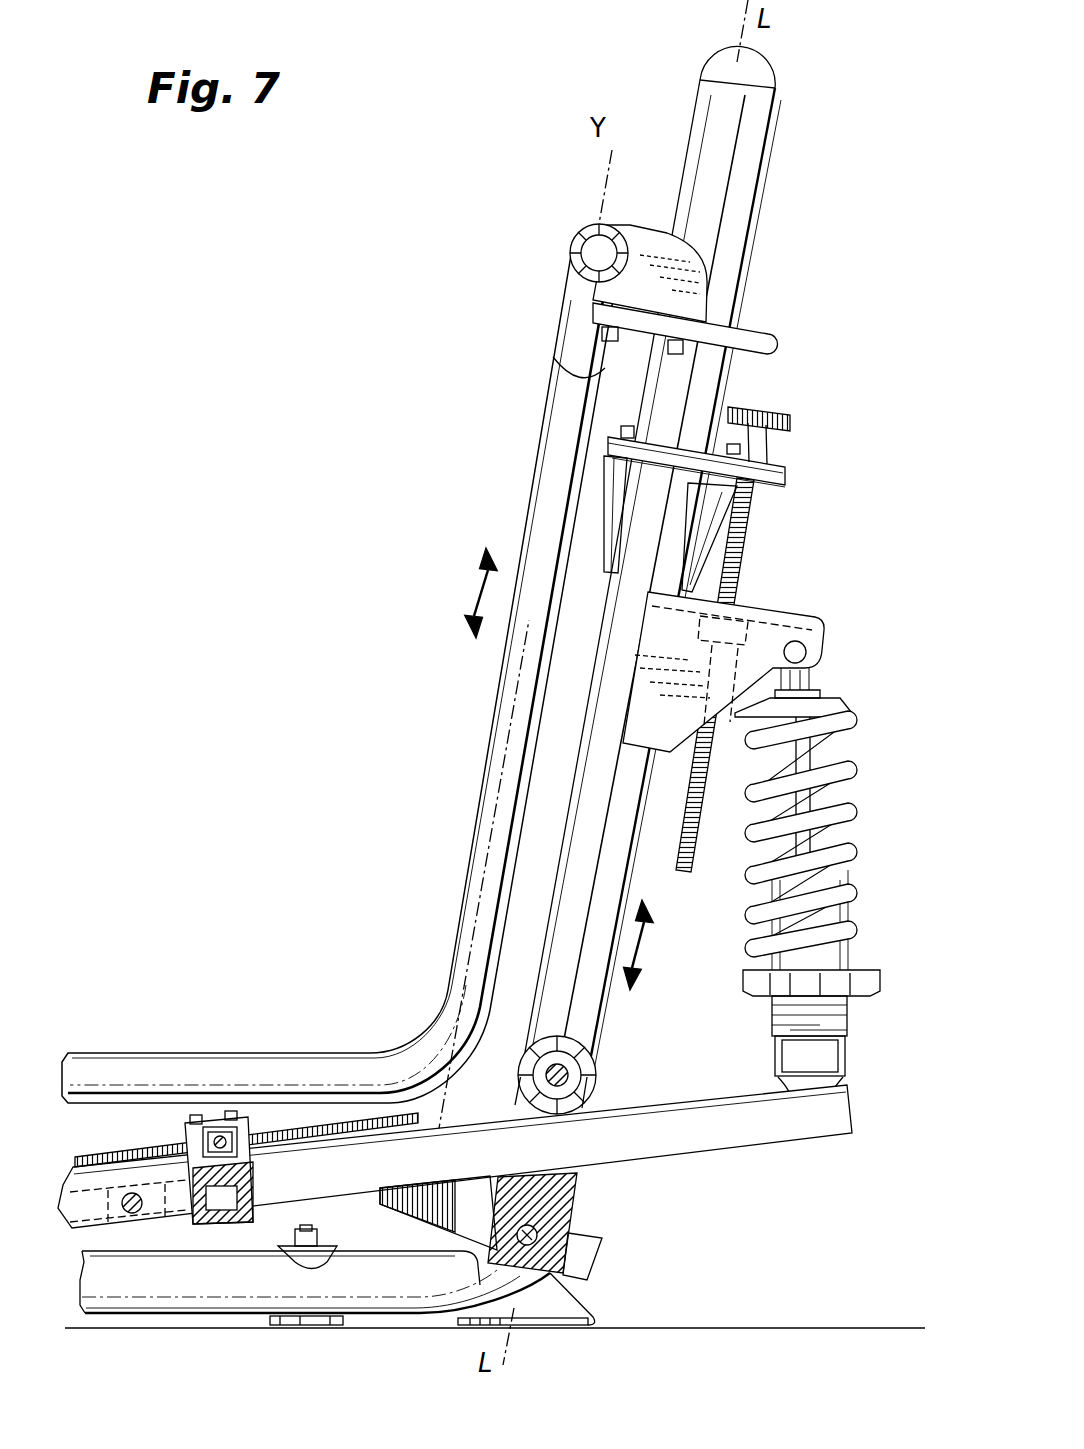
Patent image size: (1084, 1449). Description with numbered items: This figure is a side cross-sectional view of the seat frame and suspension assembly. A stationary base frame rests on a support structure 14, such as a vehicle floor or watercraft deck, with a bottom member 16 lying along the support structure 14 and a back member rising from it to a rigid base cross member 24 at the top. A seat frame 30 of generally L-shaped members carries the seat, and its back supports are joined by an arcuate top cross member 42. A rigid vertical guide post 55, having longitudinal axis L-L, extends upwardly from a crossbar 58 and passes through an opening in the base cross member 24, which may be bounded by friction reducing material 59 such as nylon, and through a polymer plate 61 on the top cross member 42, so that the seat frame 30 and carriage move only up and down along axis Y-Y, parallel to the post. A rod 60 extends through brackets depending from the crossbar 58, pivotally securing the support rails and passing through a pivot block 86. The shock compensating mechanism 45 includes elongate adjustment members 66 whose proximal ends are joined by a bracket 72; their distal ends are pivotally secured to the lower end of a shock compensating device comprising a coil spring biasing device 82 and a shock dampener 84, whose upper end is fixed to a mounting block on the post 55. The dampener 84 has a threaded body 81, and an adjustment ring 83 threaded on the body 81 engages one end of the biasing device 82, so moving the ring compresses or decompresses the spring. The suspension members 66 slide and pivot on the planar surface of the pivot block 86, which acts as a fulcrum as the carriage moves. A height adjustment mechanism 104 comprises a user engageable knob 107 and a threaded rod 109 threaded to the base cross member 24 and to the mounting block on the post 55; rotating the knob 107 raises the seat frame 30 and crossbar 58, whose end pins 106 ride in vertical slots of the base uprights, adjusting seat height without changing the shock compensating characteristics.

The support structure 14 is at (757, 1326).
The bottom member 16 is at (242, 1285).
The base cross member 24 is at (788, 478).
The seat frame 30 is at (477, 850).
The top cross member 42 is at (572, 228).
The shock compensating mechanism 45 is at (850, 1155).
The guide post 55 is at (745, 142).
The crossbar 58 is at (585, 1090).
The friction reducing material 59 is at (790, 474).
The rod 60 is at (552, 1262).
The plate 61 is at (770, 338).
The shock compensation adjustment member 66 is at (748, 1125).
The bracket 72 is at (174, 1124).
The threaded body 81 is at (775, 1012).
The biasing device 82 is at (862, 723).
The adjustment ring 83 is at (880, 972).
The shock dampener 84 is at (828, 1058).
The pivot block 86 is at (552, 1218).
The height adjustment mechanism 104 is at (887, 408).
The pin 106 is at (568, 1057).
The user engageable portion 107 is at (792, 415).
The threaded rod 109 is at (765, 562).